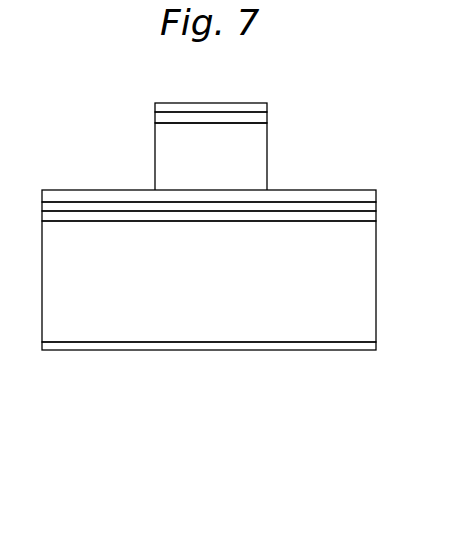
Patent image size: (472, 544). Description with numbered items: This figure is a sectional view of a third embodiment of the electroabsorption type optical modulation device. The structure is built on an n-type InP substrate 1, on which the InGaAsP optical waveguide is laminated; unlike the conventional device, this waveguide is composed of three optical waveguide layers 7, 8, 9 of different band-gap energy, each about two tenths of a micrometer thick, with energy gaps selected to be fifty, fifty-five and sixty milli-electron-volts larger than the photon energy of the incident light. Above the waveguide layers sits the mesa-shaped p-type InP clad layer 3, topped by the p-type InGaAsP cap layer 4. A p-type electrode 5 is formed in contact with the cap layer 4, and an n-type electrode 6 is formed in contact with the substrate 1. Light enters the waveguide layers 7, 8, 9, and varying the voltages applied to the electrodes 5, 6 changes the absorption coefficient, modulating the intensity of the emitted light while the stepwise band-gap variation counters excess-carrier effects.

The n-type InP substrate 1 is at (376, 280).
The p-type InP clad layer 3 is at (267, 160).
The p-type InGaAsP cap layer 4 is at (267, 122).
The p-type electrode 5 is at (267, 104).
The n-type electrode 6 is at (384, 344).
The optical waveguide layer 7 is at (376, 216).
The optical waveguide layer 8 is at (376, 205).
The optical waveguide layer 9 is at (376, 196).